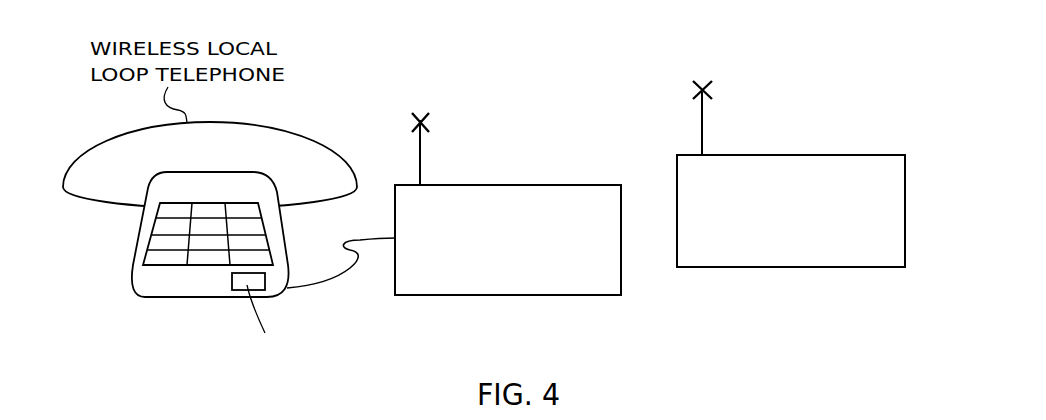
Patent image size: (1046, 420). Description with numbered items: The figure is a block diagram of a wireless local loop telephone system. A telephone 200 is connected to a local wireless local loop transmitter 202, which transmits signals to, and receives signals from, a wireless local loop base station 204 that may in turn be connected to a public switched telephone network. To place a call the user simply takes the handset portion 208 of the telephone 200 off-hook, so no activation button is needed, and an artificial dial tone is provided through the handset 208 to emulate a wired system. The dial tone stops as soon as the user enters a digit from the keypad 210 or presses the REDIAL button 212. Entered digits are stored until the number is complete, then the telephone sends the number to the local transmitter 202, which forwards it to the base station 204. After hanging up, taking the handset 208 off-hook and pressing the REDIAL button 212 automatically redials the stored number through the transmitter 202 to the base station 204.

The telephone 200 is at (155, 289).
The wireless local loop transmitter 202 is at (587, 290).
The wireless local loop base station 204 is at (873, 257).
The handset portion 208 is at (273, 147).
The keypad 210 is at (162, 243).
The REDIAL button 212 is at (233, 280).